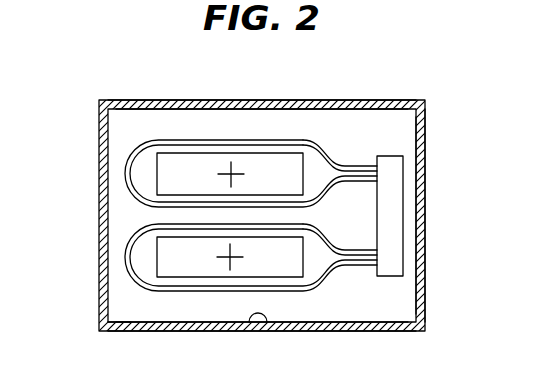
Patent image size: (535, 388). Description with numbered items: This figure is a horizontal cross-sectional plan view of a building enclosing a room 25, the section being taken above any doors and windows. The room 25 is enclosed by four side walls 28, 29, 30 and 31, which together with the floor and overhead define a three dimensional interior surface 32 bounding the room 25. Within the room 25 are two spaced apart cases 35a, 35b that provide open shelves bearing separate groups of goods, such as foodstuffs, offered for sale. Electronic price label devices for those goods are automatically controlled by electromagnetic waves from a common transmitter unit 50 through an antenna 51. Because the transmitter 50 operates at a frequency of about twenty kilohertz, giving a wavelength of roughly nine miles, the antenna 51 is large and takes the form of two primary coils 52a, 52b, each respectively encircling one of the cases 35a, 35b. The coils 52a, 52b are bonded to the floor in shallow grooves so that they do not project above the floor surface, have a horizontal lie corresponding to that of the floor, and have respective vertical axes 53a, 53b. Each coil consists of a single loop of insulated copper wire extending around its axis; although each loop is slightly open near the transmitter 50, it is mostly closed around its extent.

The room 25 is at (367, 303).
The side wall 28 is at (133, 282).
The side wall 29 is at (272, 101).
The side wall 30 is at (427, 267).
The side wall 31 is at (343, 331).
The interior surface 32 is at (117, 332).
The case 35a is at (279, 168).
The case 35b is at (183, 263).
The common transmitter unit 50 is at (385, 187).
The antenna 51 is at (209, 185).
The primary coil 52a is at (172, 140).
The primary coil 52b is at (120, 322).
The vertical axis 53a is at (233, 166).
The vertical axis 53b is at (220, 263).